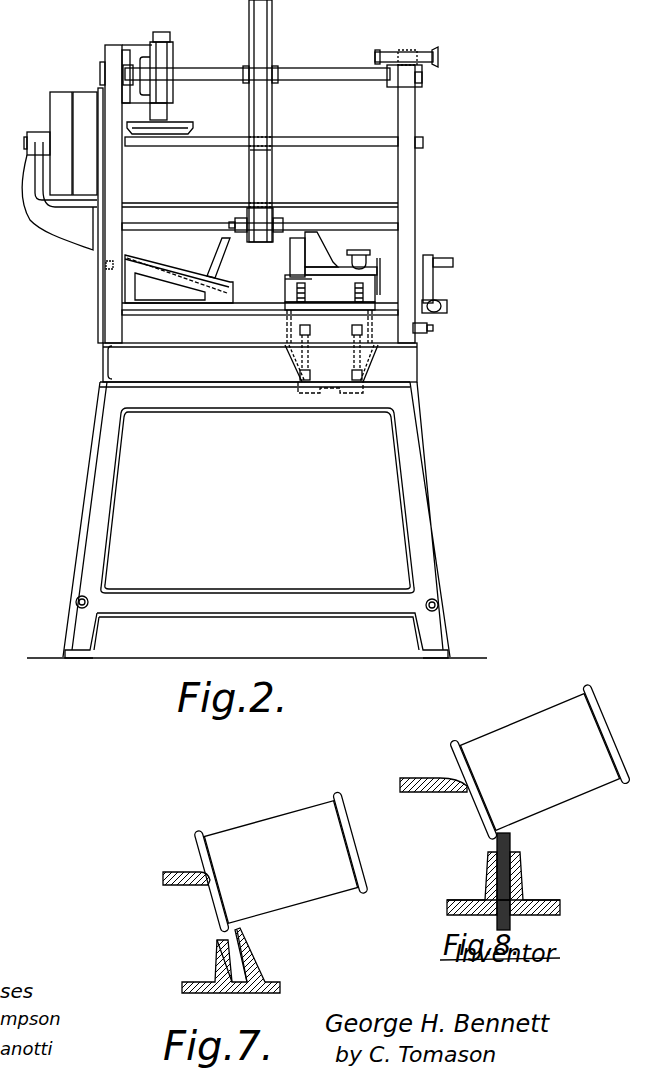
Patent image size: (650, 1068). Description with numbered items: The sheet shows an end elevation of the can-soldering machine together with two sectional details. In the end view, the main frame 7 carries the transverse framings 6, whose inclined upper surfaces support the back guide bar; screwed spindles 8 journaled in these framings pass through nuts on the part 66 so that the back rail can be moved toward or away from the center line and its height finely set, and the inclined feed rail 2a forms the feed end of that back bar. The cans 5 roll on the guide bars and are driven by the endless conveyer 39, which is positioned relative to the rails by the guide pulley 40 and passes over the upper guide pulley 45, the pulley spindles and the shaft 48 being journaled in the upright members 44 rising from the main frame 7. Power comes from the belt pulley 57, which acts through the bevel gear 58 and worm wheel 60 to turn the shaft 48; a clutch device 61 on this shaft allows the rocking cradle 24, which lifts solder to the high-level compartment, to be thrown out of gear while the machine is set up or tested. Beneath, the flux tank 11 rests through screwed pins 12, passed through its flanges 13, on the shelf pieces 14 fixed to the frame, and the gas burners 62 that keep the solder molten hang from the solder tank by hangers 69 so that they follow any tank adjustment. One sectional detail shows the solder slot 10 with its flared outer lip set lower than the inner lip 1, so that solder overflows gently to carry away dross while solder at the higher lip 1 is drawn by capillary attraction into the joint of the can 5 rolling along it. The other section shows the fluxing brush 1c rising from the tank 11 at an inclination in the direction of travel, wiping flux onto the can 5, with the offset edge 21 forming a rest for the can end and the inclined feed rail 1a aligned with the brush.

In FIG. 7, the front guide bar 1 is at (246, 948).
In FIG. 2, the inclined feed rail 1a is at (290, 257).
In FIG. 8, the fluxing brush or pad 1c is at (512, 840).
In FIG. 2, the inclined feed rail 2a is at (222, 251).
In FIG. 7, the can 5 is at (265, 823).
In FIG. 8, the can 5 is at (539, 762).
In FIG. 2, the transverse framing 6 is at (156, 263).
In FIG. 2, the main frame 7 is at (100, 408).
In FIG. 2, the screwed spindle 8 is at (107, 266).
In FIG. 7, the solder slot 10 is at (218, 953).
In FIG. 2, the flux tank 11 is at (285, 292).
In FIG. 8, the flux tank 11 is at (486, 880).
In FIG. 2, the screwed pin 12 is at (355, 292).
In FIG. 2, the flange 13 is at (337, 310).
In FIG. 2, the shelf piece 14 is at (210, 337).
In FIG. 7, the offset edge 21 is at (186, 878).
In FIG. 8, the offset edge 21 is at (411, 793).
In FIG. 2, the rocking cradle 24 is at (360, 255).
In FIG. 2, the endless conveyer 39 is at (268, 175).
In FIG. 2, the guide pulley 40 is at (250, 242).
In FIG. 2, the upright member 44 is at (122, 178).
In FIG. 2, the upper guide pulley 45 is at (273, 26).
In FIG. 2, the shaft 48 is at (338, 68).
In FIG. 2, the belt pulley 57 is at (84, 92).
In FIG. 2, the bevel gear 58 is at (190, 132).
In FIG. 2, the worm wheel 60 is at (173, 66).
In FIG. 2, the clutch device 61 is at (384, 52).
In FIG. 2, the gas burner 62 is at (352, 358).
In FIG. 2, the nut-carrying part 66 is at (200, 272).
In FIG. 2, the hanger 69 is at (290, 358).